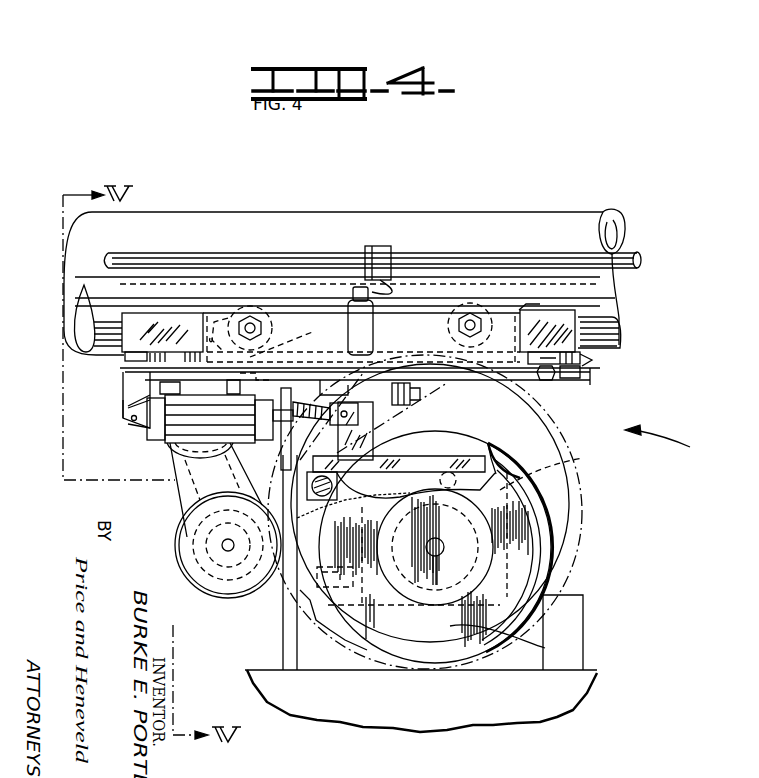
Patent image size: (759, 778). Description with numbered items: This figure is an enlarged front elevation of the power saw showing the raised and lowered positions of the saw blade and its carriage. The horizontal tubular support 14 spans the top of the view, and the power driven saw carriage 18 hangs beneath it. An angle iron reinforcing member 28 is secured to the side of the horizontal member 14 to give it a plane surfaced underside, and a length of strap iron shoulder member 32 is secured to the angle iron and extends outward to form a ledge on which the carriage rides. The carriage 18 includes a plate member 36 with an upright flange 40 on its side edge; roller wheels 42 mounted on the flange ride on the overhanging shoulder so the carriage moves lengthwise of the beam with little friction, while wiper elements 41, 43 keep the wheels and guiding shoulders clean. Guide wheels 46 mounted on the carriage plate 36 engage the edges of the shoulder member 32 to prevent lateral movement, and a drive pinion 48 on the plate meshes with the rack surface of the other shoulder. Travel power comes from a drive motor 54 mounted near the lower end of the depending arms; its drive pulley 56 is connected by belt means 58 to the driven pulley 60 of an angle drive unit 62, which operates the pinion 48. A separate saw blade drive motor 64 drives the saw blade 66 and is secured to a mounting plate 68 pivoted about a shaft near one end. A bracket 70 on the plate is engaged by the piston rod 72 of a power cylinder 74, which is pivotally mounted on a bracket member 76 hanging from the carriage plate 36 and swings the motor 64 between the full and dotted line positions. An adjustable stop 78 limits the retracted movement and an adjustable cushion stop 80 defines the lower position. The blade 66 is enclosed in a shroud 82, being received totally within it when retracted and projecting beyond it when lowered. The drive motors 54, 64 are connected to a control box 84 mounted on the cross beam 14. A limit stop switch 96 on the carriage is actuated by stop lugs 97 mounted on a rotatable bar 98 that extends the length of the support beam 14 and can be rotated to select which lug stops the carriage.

The horizontal tubular support 14 is at (478, 213).
The power driven saw carriage 18 is at (672, 442).
The angle iron reinforcing member 28 is at (560, 325).
The strap iron shoulder member 32 is at (592, 356).
The carriage plate member 36 is at (462, 368).
The upright flange 40 is at (297, 312).
The wiper element 41 is at (225, 320).
The roller wheel 42 is at (249, 306).
The wiper element 43 is at (522, 307).
The guide wheel 46 is at (140, 362).
The drive pinion 48 is at (293, 337).
The drive motor 54 is at (212, 587).
The drive pulley 56 is at (226, 590).
The belt means 58 is at (185, 492).
The driven pulley 60 is at (172, 452).
The angle drive unit 62 is at (250, 448).
The saw blade drive motor 64 is at (583, 460).
The saw blade 66 is at (540, 578).
The mounting plate 68 is at (420, 455).
The bracket 70 is at (370, 432).
The piston rod 72 is at (306, 404).
The power cylinder 74 is at (185, 413).
The bracket member 76 is at (125, 398).
The adjustable stop 78 is at (414, 395).
The adjustable cushion stop 80 is at (290, 610).
The shroud 82 is at (575, 513).
The control box 84 is at (568, 636).
The limit stop switch 96 is at (373, 328).
The stop lug 97 is at (378, 248).
The rotatable bar 98 is at (520, 258).